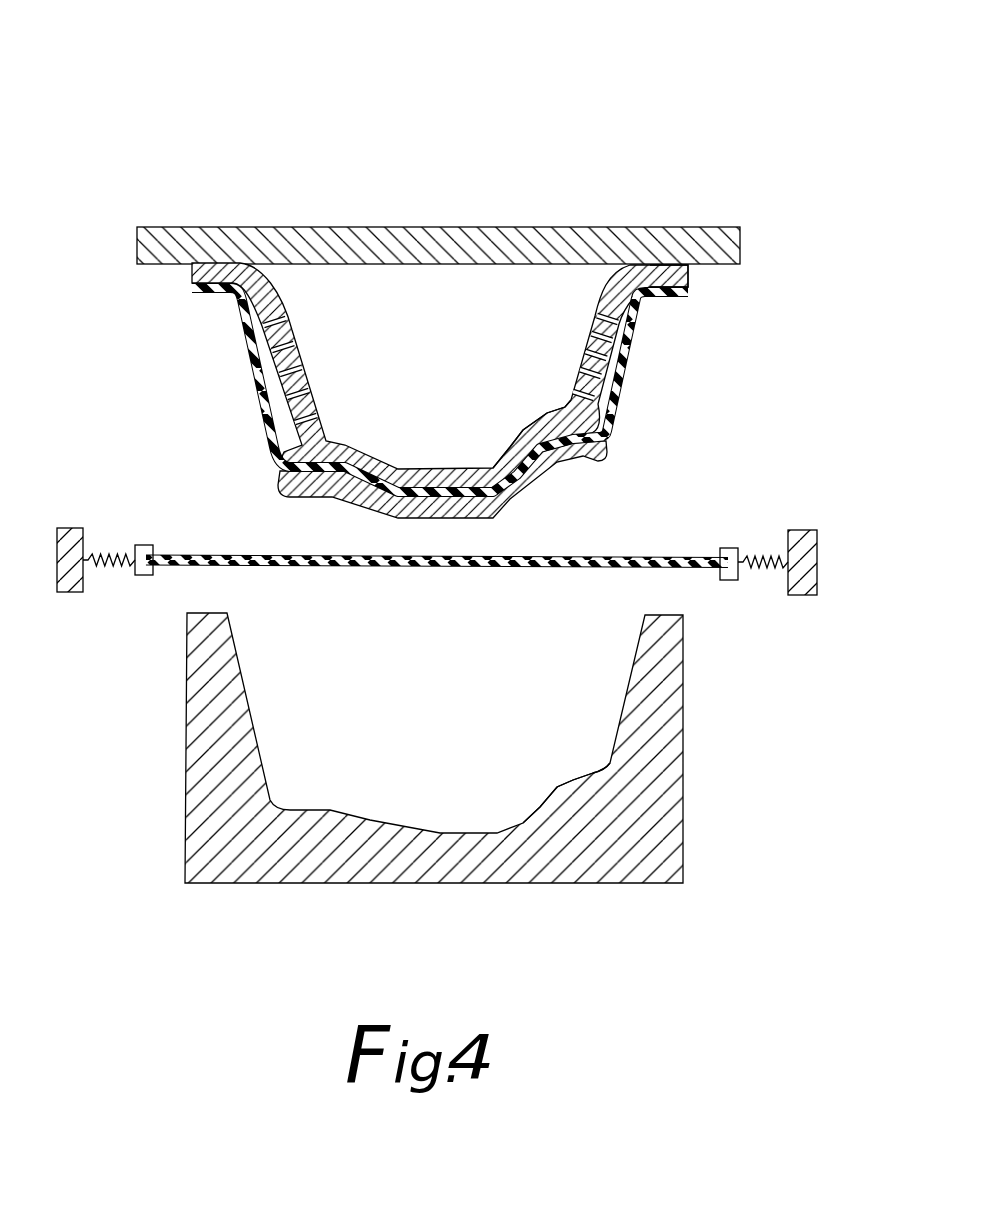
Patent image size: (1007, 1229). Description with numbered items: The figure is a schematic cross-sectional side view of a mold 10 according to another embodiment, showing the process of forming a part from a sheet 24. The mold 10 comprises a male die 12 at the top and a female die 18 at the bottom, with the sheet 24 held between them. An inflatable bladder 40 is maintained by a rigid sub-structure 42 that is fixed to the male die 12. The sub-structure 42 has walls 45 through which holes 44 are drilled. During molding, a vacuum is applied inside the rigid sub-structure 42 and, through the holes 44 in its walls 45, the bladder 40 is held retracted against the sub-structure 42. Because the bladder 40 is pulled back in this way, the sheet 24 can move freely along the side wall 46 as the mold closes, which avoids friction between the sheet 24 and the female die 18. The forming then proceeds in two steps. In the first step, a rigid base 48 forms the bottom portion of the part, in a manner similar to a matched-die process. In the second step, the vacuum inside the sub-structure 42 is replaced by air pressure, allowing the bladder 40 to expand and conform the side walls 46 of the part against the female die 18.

The mold 10 is at (437, 443).
The male die 12 is at (338, 227).
The female die 18 is at (220, 757).
The sheet 24 is at (240, 553).
The inflatable bladder 40 is at (627, 372).
The rigid sub-structure 42 is at (688, 273).
The holes 44 is at (282, 321).
The walls 45 is at (514, 425).
The side wall 46 is at (622, 717).
The rigid base 48 is at (540, 475).